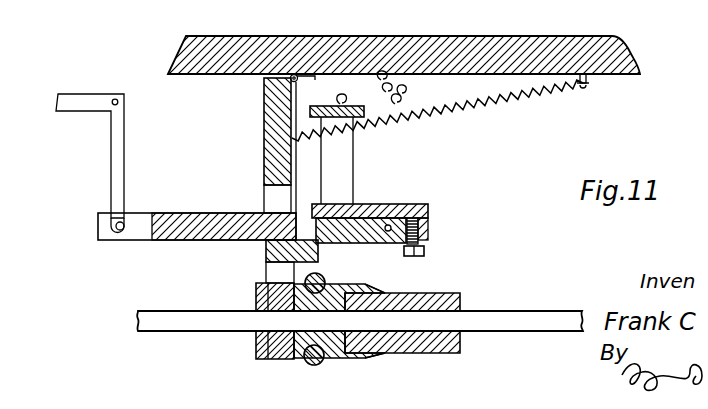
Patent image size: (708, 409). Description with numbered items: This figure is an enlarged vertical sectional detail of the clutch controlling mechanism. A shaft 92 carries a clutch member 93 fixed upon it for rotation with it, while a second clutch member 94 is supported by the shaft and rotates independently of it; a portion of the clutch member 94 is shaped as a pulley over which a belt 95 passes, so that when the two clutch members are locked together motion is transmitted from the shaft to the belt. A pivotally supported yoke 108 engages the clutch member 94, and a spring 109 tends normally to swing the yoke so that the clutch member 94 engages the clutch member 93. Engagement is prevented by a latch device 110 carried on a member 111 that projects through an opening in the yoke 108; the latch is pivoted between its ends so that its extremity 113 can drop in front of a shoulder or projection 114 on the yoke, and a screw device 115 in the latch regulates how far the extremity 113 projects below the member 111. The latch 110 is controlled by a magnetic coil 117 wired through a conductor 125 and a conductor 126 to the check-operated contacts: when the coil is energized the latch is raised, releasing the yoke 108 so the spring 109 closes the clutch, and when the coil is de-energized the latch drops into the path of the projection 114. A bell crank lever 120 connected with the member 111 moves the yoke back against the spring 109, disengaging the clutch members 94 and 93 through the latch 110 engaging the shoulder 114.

The shaft 92 is at (162, 330).
The clutch member 93 is at (444, 358).
The clutch member 94 is at (330, 360).
The belt 95 is at (326, 280).
The yoke 108 is at (264, 134).
The spring 109 is at (462, 112).
The latch device 110 is at (270, 197).
The member 111 is at (212, 212).
The extremity of the latch 113 is at (318, 244).
The shoulder or projection 114 is at (318, 262).
The screw device 115 is at (425, 252).
The magnetic coil 117 is at (347, 160).
The bell crank lever 120 is at (121, 176).
The conductor 125 is at (400, 76).
The conductor 126 is at (345, 82).